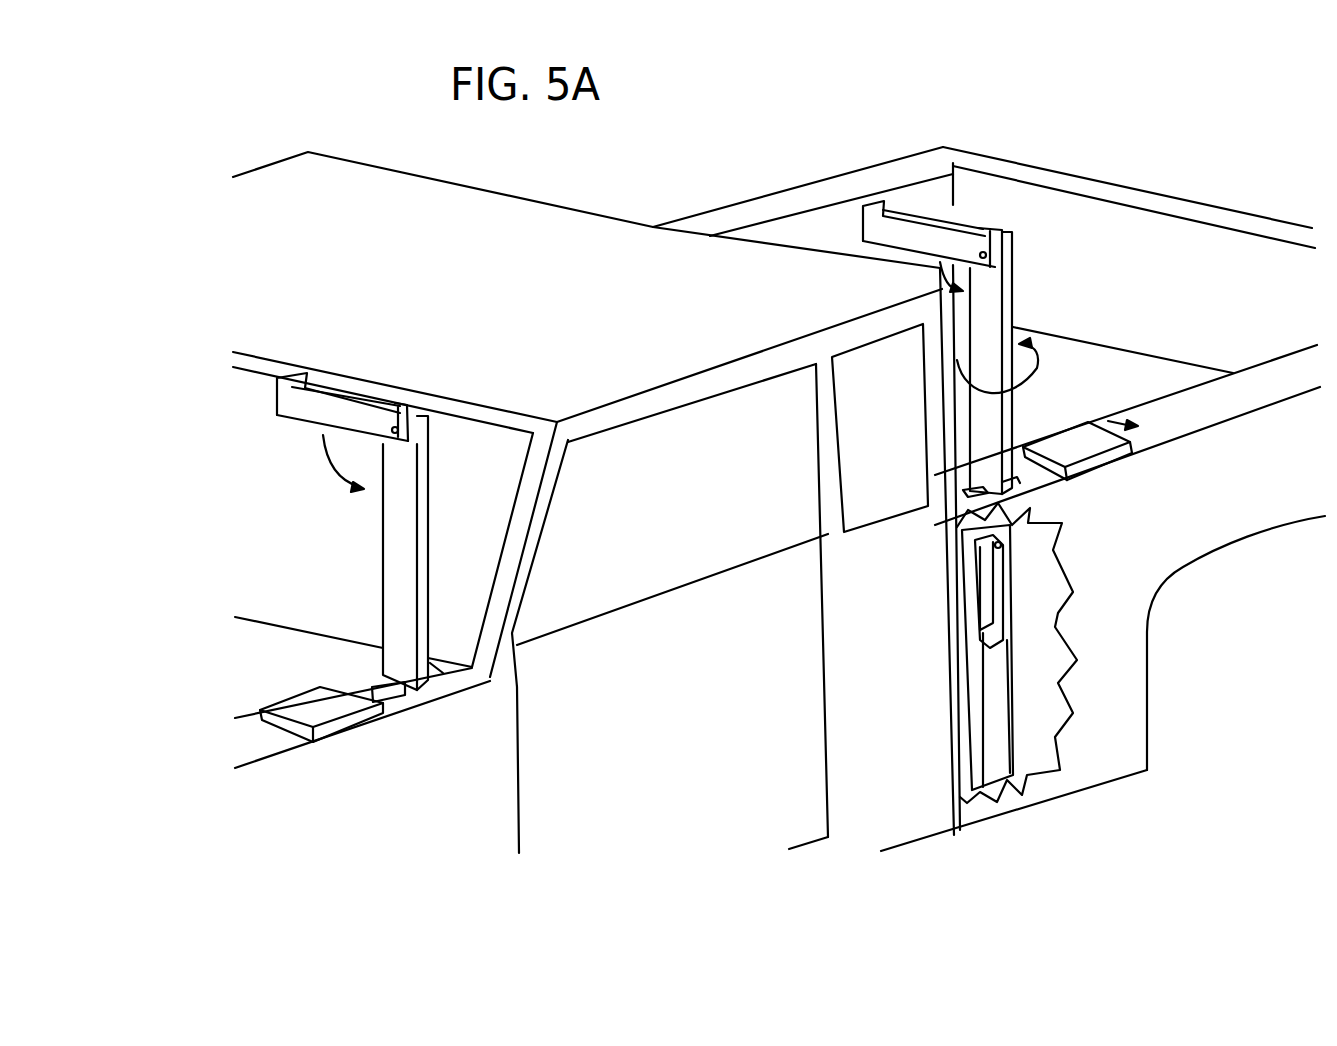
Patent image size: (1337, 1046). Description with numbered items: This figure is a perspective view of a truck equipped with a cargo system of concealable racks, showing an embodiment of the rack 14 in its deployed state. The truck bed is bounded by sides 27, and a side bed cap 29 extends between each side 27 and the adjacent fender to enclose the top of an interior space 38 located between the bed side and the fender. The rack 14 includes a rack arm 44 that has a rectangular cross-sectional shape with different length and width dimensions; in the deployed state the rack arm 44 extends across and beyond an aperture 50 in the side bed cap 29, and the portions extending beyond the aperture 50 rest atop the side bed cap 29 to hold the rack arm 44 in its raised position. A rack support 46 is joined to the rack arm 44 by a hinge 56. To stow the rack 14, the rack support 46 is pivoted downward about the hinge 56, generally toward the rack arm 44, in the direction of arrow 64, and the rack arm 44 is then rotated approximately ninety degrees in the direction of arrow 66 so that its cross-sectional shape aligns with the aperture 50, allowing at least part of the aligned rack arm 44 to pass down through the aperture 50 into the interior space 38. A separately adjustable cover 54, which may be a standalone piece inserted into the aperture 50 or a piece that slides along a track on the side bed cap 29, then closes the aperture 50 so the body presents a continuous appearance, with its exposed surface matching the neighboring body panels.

The rack 14 is at (692, 433).
The sides of the truck bed 27 is at (800, 243).
The side bed cap 29 is at (829, 187).
The interior space 38 is at (1033, 552).
The rack arm 44 is at (402, 541).
The rack support 46 is at (320, 417).
The aperture 50 is at (398, 688).
The cover 54 is at (303, 703).
The hinge 56 is at (433, 430).
The arrow 64 is at (327, 471).
The arrow 66 is at (1042, 363).